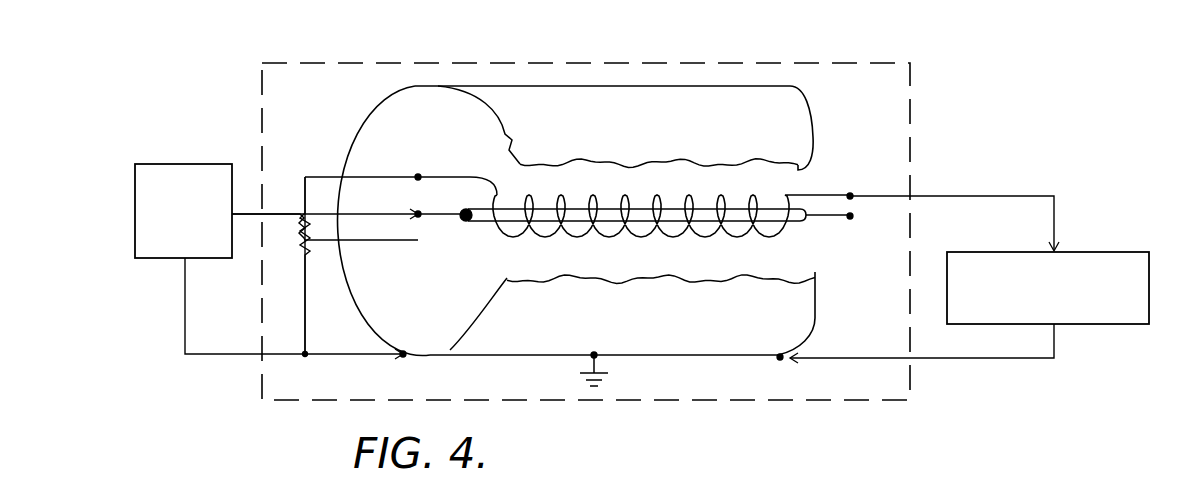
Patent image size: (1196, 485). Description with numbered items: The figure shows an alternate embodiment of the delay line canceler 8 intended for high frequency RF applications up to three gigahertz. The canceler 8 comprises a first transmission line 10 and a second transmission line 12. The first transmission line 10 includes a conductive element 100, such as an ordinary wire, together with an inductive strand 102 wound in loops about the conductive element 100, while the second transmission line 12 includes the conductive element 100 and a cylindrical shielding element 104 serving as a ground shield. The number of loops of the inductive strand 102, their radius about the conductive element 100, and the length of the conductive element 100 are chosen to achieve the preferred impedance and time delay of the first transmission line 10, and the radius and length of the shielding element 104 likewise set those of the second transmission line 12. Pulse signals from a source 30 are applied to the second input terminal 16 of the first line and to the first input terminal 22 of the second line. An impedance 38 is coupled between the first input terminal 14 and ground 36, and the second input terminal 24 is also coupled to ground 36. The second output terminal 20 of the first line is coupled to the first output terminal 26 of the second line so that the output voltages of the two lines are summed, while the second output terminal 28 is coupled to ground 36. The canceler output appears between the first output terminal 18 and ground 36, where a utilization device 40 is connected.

The delay line canceler 8 is at (853, 63).
The first transmission line 10 is at (409, 202).
The second transmission line 12 is at (424, 277).
The first input terminal 14 is at (401, 169).
The second input terminal 16 is at (417, 220).
The first output terminal 18 is at (852, 194).
The second output terminal 20 is at (853, 218).
The first input terminal 22 is at (420, 215).
The second input terminal 24 is at (404, 357).
The first output terminal 26 is at (851, 219).
The second output terminal 28 is at (781, 359).
The source 30 is at (151, 164).
The ground 36 is at (600, 372).
The impedance 38 is at (309, 255).
The device for utilizing the output 40 is at (1083, 252).
The conductive element 100 is at (477, 222).
The inductive strand 102 is at (650, 195).
The cylindrical shielding element 104 is at (645, 120).